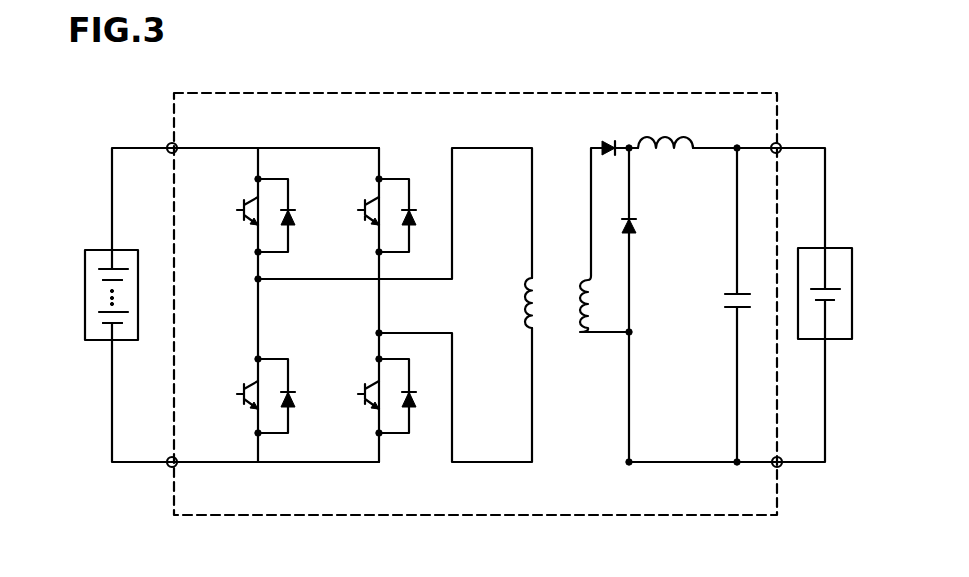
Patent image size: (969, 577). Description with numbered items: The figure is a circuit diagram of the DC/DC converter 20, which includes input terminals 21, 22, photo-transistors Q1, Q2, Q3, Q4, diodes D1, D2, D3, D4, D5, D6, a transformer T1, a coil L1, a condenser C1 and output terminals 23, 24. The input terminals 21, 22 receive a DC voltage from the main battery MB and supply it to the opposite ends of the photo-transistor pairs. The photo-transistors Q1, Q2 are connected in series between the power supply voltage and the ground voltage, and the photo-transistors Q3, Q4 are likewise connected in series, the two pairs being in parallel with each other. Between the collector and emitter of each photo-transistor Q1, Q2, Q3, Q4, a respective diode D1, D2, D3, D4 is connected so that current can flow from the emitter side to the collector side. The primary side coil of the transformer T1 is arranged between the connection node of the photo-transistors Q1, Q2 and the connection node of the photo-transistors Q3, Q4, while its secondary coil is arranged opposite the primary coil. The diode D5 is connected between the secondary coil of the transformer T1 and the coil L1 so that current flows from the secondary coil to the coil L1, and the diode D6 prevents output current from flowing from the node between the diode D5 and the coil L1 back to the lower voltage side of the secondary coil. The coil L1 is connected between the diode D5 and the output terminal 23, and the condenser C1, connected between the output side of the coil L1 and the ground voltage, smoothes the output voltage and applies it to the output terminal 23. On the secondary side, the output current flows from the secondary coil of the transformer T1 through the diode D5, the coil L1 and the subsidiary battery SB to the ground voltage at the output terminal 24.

The DC/DC converter 20 is at (460, 517).
The input terminal 21 is at (167, 143).
The input terminal 22 is at (167, 467).
The output terminal 23 is at (781, 143).
The output terminal 24 is at (783, 467).
The main battery MB is at (101, 342).
The subsidiary battery SB is at (836, 340).
The photo-transistor Q1 is at (232, 215).
The photo-transistor Q2 is at (233, 396).
The photo-transistor Q3 is at (355, 215).
The photo-transistor Q4 is at (355, 396).
The diode D1 is at (289, 215).
The diode D2 is at (289, 396).
The diode D3 is at (411, 215).
The diode D4 is at (411, 396).
The diode D5 is at (611, 134).
The diode D6 is at (643, 242).
The transformer T1 is at (577, 324).
The coil L1 is at (665, 131).
The condenser C1 is at (722, 305).